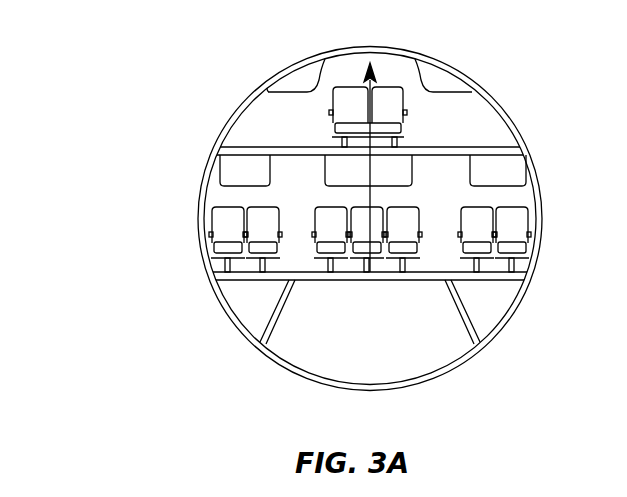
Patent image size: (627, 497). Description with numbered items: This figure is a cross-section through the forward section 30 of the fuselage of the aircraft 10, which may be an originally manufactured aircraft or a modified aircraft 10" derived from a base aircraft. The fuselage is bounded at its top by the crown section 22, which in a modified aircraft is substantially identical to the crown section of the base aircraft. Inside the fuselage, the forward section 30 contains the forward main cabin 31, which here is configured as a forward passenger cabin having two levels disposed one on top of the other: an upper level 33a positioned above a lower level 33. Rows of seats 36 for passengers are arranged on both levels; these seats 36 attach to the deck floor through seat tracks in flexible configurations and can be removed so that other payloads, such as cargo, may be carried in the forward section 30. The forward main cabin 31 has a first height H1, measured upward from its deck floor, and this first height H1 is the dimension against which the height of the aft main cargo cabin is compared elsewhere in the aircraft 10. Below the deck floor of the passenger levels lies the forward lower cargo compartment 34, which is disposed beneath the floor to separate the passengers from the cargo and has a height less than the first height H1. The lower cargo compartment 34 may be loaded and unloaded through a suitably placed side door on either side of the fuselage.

The aircraft 10 is at (170, 496).
The crown section 22 is at (343, 66).
The upper level 33a is at (481, 147).
The forward main cabin 31 is at (257, 202).
The forward section 30 is at (460, 196).
The seats 36 is at (230, 228).
The lower level 33 is at (247, 269).
The forward lower cargo compartment 34 is at (311, 342).
The first height H1 is at (378, 168).